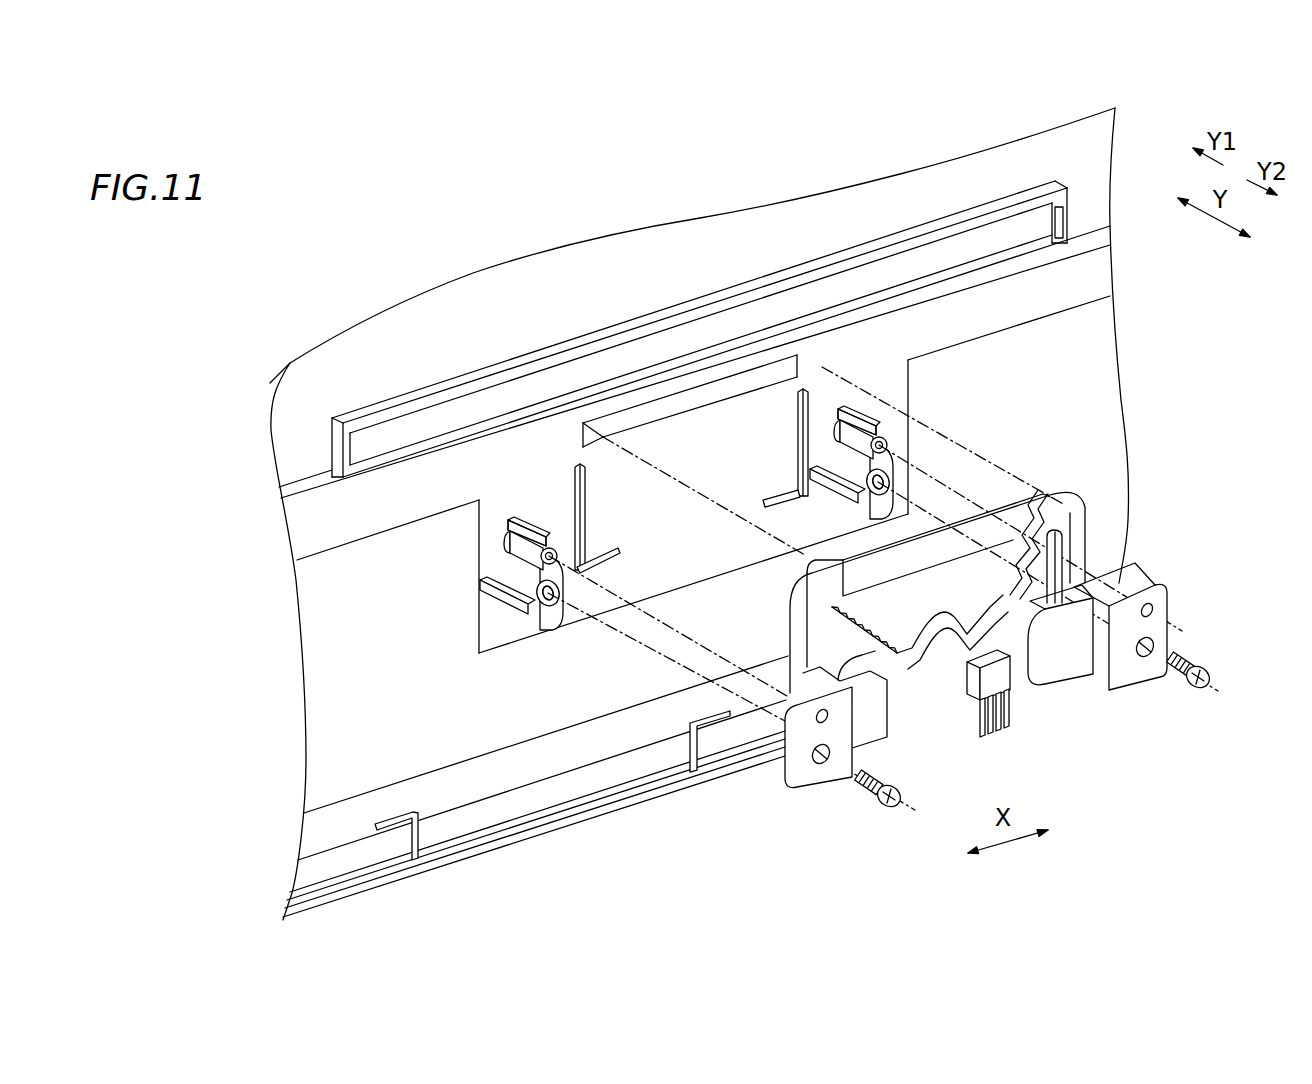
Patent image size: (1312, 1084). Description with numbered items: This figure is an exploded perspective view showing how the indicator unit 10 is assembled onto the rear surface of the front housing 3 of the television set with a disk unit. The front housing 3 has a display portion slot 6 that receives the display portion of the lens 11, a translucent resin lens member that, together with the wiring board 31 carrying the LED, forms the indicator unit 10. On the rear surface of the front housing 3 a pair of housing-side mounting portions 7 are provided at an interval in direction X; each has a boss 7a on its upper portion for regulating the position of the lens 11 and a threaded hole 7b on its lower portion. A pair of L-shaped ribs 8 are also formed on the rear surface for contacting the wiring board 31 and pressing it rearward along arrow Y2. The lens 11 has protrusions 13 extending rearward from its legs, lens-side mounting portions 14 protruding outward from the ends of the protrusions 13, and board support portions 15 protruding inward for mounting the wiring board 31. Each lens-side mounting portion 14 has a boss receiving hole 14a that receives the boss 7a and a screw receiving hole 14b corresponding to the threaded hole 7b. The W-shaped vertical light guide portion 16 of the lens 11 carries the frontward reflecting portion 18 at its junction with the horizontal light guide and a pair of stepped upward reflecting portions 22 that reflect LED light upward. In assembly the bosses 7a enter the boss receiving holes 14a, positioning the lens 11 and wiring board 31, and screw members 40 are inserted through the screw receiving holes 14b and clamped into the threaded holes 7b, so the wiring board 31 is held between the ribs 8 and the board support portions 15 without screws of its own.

The front housing 3 is at (1080, 280).
The display portion slot 6 is at (762, 380).
The housing-side mounting portion 7 is at (517, 610).
The boss 7a is at (545, 553).
The threaded hole 7b is at (549, 602).
The L-shaped rib 8 is at (582, 510).
The indicator unit 10 is at (1098, 778).
The lens 11 is at (1103, 513).
The protrusion 13 is at (1093, 677).
The lens-side mounting portion 14 is at (805, 787).
The boss receiving hole 14a is at (817, 720).
The screw receiving hole 14b is at (832, 762).
The board support portion 15 is at (875, 728).
The vertical light guide portion 16 is at (983, 605).
The frontward reflecting portion 18 is at (1018, 517).
The upward reflecting portion 22 is at (1022, 555).
The wiring board 31 is at (947, 698).
The screw member 40 is at (885, 800).